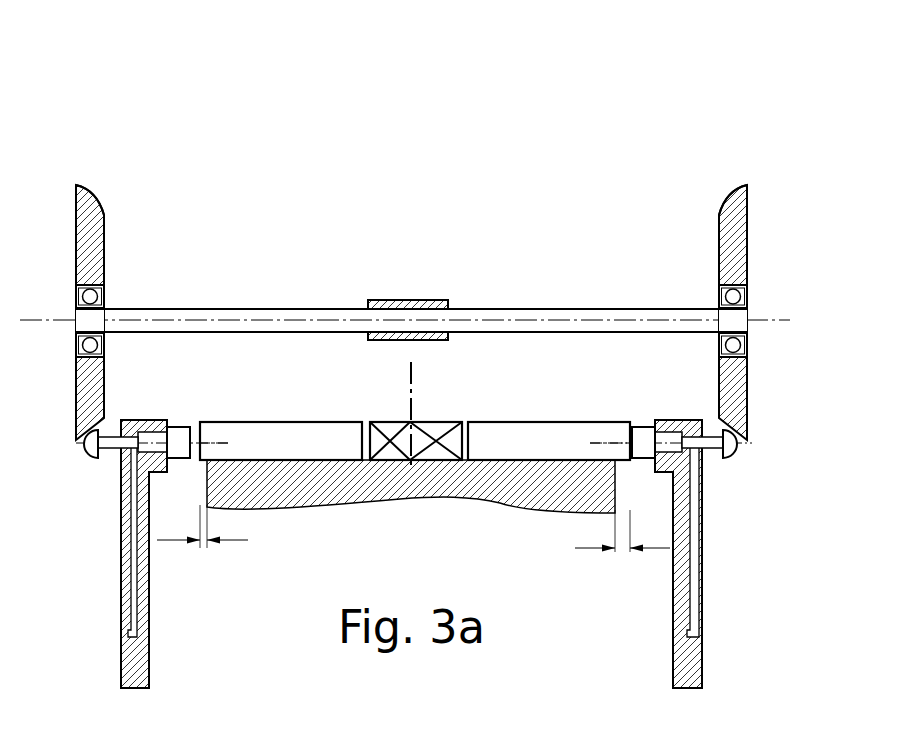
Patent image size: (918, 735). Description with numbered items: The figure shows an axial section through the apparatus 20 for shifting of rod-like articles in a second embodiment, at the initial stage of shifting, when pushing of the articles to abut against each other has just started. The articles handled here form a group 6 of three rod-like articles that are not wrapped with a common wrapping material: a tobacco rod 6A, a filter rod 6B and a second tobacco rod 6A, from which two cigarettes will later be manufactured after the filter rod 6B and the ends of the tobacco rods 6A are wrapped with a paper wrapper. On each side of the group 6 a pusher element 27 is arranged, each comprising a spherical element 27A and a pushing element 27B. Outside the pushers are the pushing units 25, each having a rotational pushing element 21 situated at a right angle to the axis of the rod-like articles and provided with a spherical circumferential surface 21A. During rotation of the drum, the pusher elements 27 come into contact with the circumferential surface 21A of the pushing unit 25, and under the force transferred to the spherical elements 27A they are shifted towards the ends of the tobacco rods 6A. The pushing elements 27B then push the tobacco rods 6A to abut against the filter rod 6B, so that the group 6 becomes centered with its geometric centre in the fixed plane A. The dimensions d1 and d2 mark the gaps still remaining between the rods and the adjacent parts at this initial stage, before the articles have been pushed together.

The apparatus for shifting of rod-like articles 20 is at (295, 203).
The pushing unit 25 is at (102, 148).
The rotational pushing element 21 is at (84, 188).
The spherical circumferential surface 21A is at (197, 163).
The group of rod-like articles 6 is at (348, 388).
The tobacco rod 6A is at (322, 436).
The filter rod 6B is at (427, 421).
The fixed plane A is at (409, 364).
The pusher element 27 is at (105, 459).
The spherical element 27A is at (91, 457).
The pushing element 27B is at (180, 443).
The distance d1 is at (202, 525).
The distance d2 is at (624, 531).